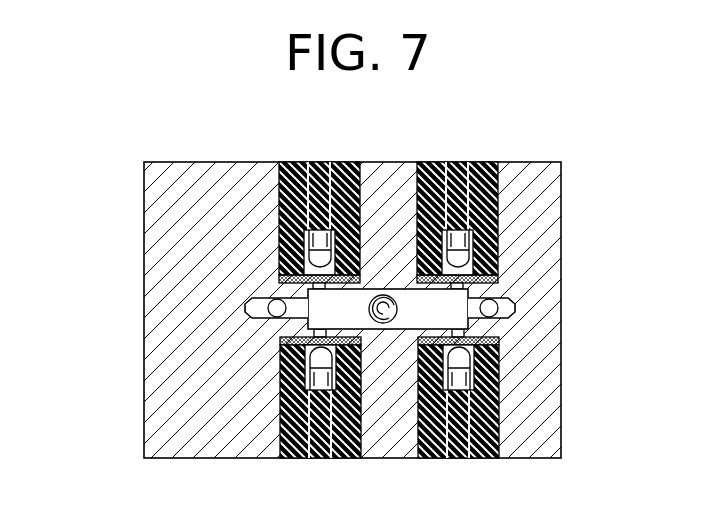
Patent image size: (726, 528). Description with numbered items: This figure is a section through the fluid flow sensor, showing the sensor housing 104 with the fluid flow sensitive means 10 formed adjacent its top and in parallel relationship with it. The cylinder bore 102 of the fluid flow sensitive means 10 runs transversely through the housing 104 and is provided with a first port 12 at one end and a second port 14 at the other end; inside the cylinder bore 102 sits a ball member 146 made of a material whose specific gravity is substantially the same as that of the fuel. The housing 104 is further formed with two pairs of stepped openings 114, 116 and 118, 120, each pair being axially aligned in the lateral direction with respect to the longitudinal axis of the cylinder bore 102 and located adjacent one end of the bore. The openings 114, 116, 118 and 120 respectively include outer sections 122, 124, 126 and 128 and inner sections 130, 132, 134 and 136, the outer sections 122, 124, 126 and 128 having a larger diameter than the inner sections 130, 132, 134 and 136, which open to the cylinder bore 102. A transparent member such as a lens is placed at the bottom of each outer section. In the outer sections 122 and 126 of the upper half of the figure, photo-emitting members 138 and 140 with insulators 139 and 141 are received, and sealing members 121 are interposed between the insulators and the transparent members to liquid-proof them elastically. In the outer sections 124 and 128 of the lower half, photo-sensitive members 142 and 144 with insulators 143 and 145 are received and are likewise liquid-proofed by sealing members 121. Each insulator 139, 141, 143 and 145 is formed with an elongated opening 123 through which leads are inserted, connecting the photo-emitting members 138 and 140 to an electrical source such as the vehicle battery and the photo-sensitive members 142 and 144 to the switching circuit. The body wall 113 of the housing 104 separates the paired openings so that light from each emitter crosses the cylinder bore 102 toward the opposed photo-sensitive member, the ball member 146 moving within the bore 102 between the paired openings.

The fluid flow sensitive means 10 is at (395, 163).
The first port 12 is at (264, 319).
The second port 14 is at (470, 332).
The cylinder bore 102 is at (403, 330).
The sensor housing 104 is at (548, 203).
The body wall 113 is at (278, 252).
The stepped opening 114 is at (345, 163).
The stepped opening 116 is at (322, 459).
The stepped opening 118 is at (490, 163).
The stepped opening 120 is at (448, 380).
The sealing member 121 is at (359, 268).
The outer section 122 is at (279, 166).
The elongated opening 123 is at (310, 163).
The outer section 124 is at (280, 348).
The outer section 126 is at (467, 245).
The outer section 128 is at (473, 375).
The inner section 130 is at (308, 290).
The inner section 132 is at (305, 333).
The inner section 134 is at (497, 289).
The inner section 136 is at (498, 339).
The photo-emitting member 138 is at (278, 247).
The insulator 139 is at (340, 162).
The photo-emitting member 140 is at (472, 256).
The insulator 141 is at (475, 162).
The photo-sensitive member 142 is at (278, 380).
The insulator 143 is at (288, 460).
The photo-sensitive member 144 is at (500, 367).
The insulator 145 is at (487, 459).
The ball member 146 is at (398, 311).